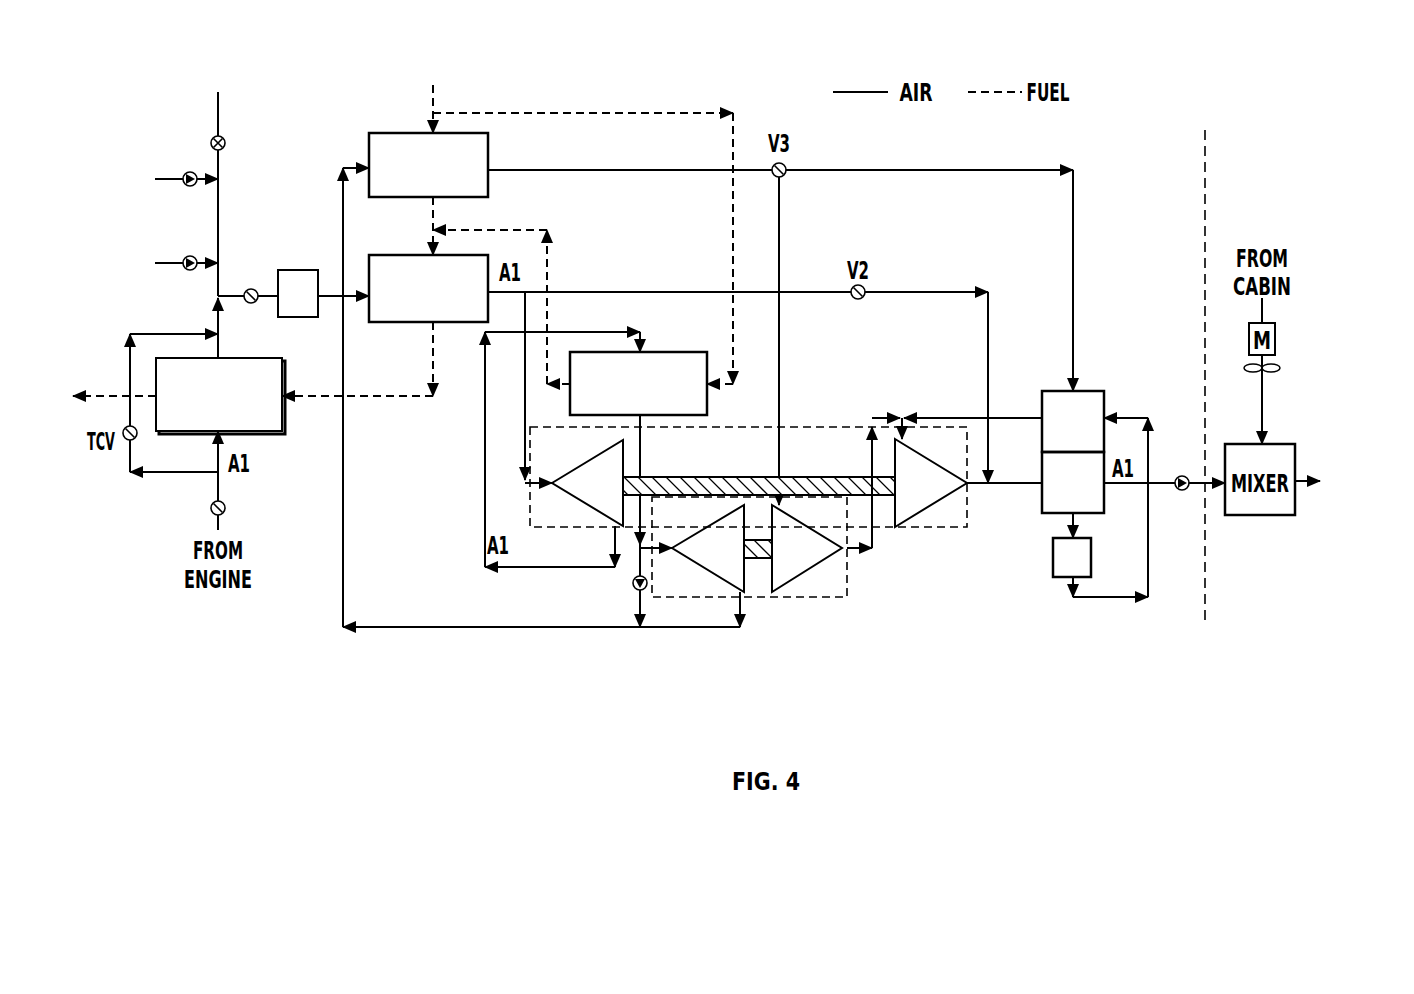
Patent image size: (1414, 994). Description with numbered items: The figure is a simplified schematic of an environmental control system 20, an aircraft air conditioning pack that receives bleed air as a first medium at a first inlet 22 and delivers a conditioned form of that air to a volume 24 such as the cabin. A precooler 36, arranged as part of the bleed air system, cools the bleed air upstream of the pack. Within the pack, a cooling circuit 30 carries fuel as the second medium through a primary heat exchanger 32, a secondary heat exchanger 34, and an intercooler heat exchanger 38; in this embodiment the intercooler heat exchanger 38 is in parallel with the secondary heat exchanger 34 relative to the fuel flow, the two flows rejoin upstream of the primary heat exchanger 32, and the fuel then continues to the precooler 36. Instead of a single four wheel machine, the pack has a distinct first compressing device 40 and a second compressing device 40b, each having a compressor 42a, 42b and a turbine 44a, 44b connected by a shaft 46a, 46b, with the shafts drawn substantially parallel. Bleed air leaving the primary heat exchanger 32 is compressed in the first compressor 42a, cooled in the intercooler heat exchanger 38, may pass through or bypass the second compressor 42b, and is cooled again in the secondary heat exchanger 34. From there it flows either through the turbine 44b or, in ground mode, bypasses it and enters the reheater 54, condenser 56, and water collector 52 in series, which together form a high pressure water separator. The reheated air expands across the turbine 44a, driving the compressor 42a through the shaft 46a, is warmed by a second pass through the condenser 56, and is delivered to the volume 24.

The environmental control system 20 is at (1149, 140).
The first inlet 22 is at (220, 294).
The volume 24 is at (1354, 495).
The cooling circuit 30 is at (503, 95).
The primary heat exchanger 32 is at (456, 319).
The secondary heat exchanger 34 is at (456, 195).
The precooler 36 is at (207, 423).
The intercooler heat exchanger 38 is at (675, 410).
The compressing device 40 is at (840, 426).
The second compressing device 40b is at (855, 580).
The first compressor 42a is at (588, 490).
The second compressor 42b is at (707, 553).
The first turbine 44a is at (910, 505).
The second turbine 44b is at (808, 553).
The first shaft 46a is at (792, 478).
The second shaft 46b is at (760, 560).
The water collector 52 is at (1052, 572).
The reheater 54 is at (1090, 400).
The condenser 56 is at (1052, 488).